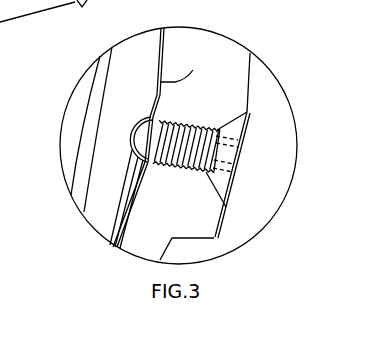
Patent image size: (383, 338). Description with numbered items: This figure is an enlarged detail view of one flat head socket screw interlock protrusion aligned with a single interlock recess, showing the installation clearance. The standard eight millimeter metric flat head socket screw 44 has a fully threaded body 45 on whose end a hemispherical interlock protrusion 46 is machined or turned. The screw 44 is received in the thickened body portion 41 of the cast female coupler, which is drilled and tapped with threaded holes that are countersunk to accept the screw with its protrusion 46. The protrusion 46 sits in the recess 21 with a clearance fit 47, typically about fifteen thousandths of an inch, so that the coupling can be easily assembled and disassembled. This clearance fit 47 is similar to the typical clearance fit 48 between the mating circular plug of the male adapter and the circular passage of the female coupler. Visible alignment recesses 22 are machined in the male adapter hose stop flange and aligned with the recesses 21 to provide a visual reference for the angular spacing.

The recess 21 is at (135, 163).
The visible alignment recess 22 is at (135, 170).
The thickened body portion 41 is at (203, 238).
The flat head socket screw 44 is at (243, 137).
The fully threaded body 45 is at (176, 174).
The hemispherical interlock protrusion 46 is at (133, 138).
The clearance fit 47 is at (148, 121).
The clearance fit 48 is at (186, 67).